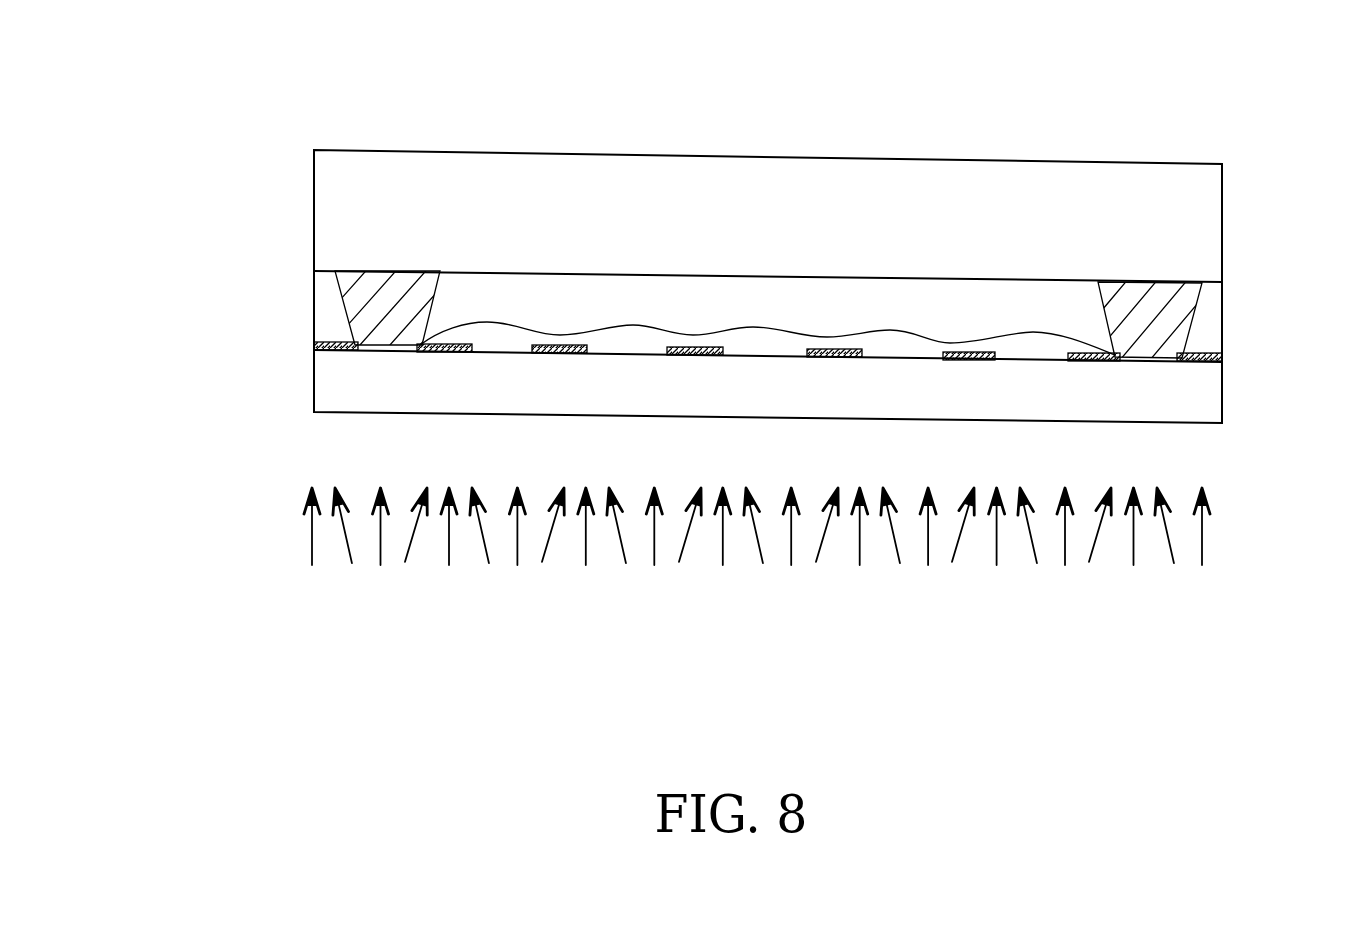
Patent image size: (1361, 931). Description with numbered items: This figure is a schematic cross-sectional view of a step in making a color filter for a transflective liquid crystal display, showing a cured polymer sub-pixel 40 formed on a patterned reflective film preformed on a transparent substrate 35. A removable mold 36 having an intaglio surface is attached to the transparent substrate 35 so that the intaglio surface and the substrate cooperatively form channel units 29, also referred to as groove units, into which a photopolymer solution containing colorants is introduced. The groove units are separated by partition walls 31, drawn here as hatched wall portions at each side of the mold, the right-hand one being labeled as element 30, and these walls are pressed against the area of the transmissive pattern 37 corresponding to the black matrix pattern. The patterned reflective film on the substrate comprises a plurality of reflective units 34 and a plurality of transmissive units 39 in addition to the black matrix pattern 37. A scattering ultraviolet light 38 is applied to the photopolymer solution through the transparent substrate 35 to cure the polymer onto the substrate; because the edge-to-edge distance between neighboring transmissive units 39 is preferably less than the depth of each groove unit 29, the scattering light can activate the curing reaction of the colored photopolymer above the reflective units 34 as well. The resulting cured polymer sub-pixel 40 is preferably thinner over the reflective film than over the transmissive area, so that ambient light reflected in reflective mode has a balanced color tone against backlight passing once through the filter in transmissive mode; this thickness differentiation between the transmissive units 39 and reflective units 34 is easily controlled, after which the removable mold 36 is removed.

The channel unit 29 is at (522, 288).
The right spacer 30 is at (1182, 312).
The partition wall 31 is at (355, 300).
The reflective unit 34 is at (980, 360).
The transparent substrate 35 is at (330, 383).
The removable mold 36 is at (340, 207).
The transmissive pattern corresponding to the black matrix pattern 37 is at (392, 350).
The scattering ultraviolet light 38 is at (808, 635).
The transmissive unit 39 is at (617, 357).
The cured polymer sub-pixel 40 is at (650, 345).